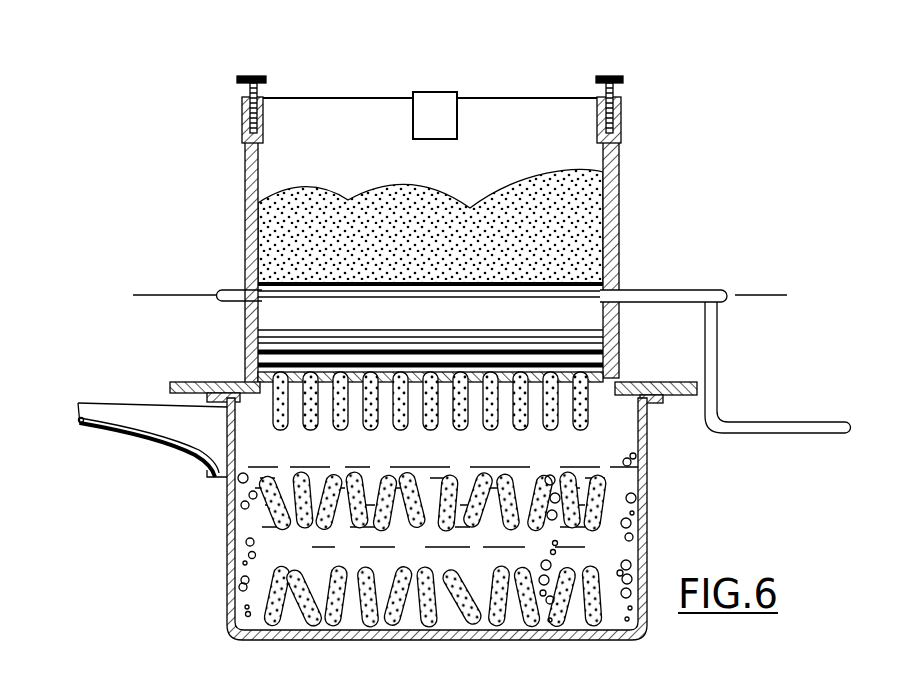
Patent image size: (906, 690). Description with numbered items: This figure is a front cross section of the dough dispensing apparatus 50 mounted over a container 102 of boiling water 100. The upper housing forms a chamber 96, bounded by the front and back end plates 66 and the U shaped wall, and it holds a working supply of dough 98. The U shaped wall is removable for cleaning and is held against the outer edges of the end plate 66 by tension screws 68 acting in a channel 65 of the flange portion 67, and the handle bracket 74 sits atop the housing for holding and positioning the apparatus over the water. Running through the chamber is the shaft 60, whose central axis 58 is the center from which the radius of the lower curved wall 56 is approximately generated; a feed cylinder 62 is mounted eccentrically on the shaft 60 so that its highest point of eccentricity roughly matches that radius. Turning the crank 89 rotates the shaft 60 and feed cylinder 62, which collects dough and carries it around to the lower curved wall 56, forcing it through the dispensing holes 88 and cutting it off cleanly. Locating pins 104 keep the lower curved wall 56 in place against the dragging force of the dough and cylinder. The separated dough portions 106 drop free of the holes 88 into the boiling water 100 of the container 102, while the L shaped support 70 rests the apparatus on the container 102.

The apparatus 50 is at (308, 97).
The chamber 96 is at (353, 140).
The handle bracket 74 is at (435, 100).
The flange portion 67 is at (602, 112).
The tension screws 68 is at (612, 77).
The channel 65 is at (620, 127).
The end plate 66 is at (613, 193).
The dough 98 is at (308, 208).
The central axis 58 is at (153, 293).
The shaft 60 is at (668, 290).
The feed cylinder 62 is at (267, 310).
The locating pins 104 is at (613, 363).
The lower curved wall 56 is at (264, 385).
The dispensing holes 88 is at (585, 383).
The crank 89 is at (740, 430).
The L shaped support 70 is at (390, 518).
The dough portions 106 is at (580, 425).
The boiling water 100 is at (267, 533).
The container 102 is at (225, 588).